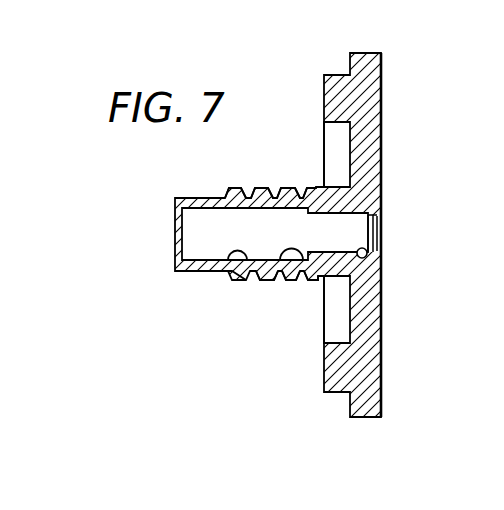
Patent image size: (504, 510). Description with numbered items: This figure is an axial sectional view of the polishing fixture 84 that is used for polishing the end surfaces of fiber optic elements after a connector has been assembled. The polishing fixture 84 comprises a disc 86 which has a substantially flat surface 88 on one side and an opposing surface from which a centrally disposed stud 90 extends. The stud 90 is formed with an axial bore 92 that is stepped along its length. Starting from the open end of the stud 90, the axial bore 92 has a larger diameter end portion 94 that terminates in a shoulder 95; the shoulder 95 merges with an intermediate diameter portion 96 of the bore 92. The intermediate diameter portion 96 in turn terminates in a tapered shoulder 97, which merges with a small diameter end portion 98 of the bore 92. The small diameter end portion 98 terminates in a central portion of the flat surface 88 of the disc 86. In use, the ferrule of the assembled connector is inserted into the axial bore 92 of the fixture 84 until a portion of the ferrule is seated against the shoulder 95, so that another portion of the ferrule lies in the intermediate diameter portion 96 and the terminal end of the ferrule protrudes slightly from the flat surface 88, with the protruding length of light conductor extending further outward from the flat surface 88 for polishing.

The polishing fixture 84 is at (384, 66).
The disc 86 is at (378, 118).
The flat surface 88 is at (382, 160).
The stud 90 is at (213, 195).
The axial bore 92 is at (211, 237).
The larger diameter end portion 94 is at (228, 268).
The shoulder 95 is at (285, 265).
The intermediate diameter portion 96 is at (310, 276).
The tapered shoulder 97 is at (368, 257).
The small diameter end portion 98 is at (378, 223).